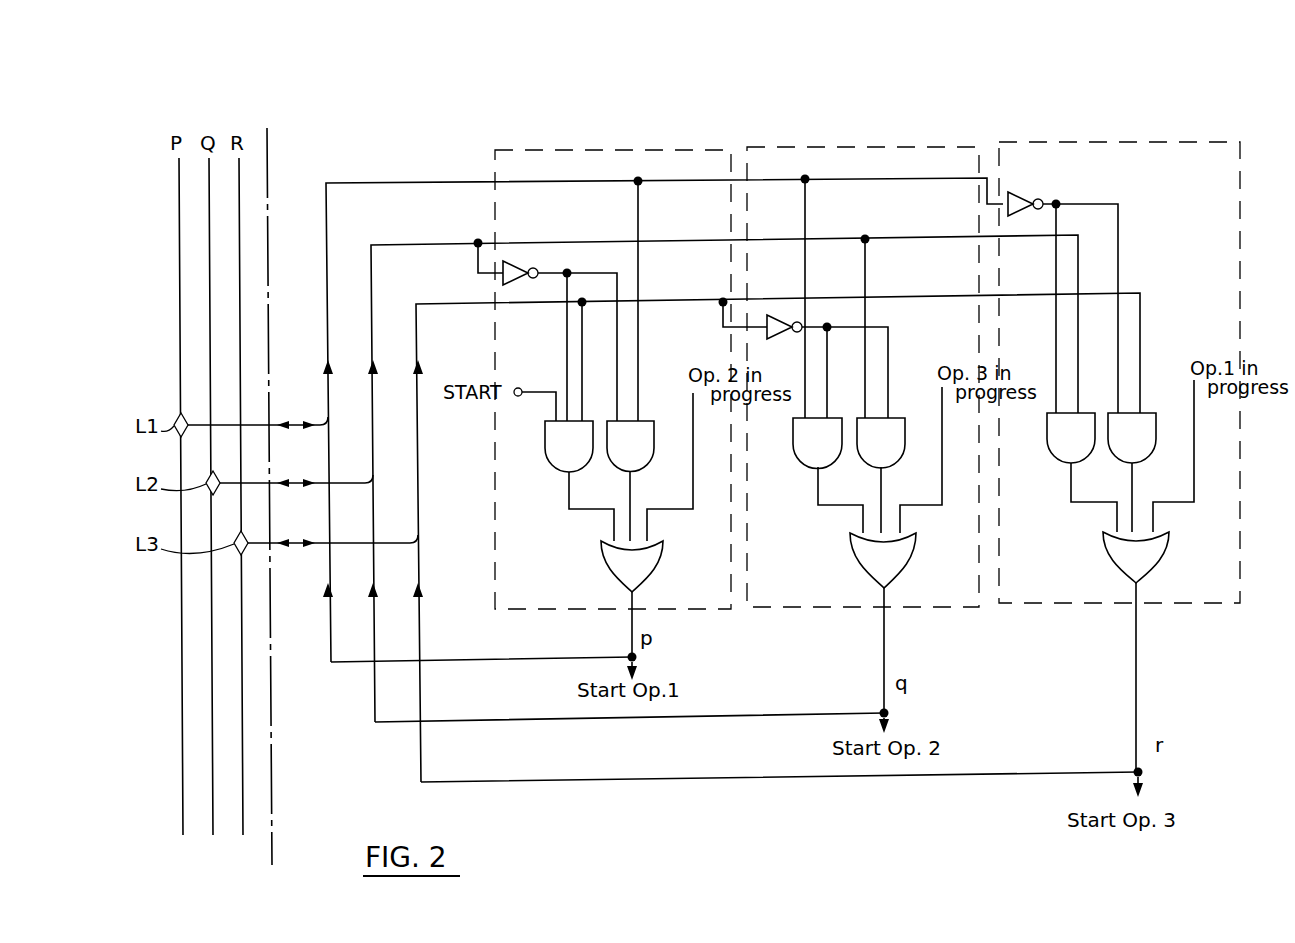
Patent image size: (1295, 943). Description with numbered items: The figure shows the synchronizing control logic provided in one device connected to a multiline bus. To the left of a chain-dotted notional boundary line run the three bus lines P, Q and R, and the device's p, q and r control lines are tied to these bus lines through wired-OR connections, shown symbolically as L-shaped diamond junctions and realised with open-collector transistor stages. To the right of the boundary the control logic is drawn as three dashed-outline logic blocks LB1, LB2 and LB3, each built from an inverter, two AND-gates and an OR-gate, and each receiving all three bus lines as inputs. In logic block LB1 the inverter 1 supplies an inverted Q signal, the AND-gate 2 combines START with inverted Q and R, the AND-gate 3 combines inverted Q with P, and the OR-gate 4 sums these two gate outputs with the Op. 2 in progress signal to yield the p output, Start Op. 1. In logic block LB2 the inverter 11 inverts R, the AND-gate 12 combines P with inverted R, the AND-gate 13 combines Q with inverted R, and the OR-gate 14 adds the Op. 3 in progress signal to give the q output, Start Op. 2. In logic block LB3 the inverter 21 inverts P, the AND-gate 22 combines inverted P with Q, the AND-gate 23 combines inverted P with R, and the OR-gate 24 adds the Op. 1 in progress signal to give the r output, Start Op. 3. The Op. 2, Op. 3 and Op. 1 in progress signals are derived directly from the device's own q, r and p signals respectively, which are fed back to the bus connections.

The inverter 1 is at (514, 281).
The AND-gate 2 is at (569, 446).
The AND-gate 3 is at (630, 446).
The OR-gate 4 is at (632, 566).
The inverter 11 is at (777, 339).
The AND-gate 12 is at (817, 443).
The AND-gate 13 is at (881, 443).
The OR-gate 14 is at (883, 560).
The inverter 21 is at (1013, 196).
The AND-gate 22 is at (1071, 438).
The AND-gate 23 is at (1132, 438).
The OR-gate 24 is at (1136, 557).
The logic block LB1 is at (634, 153).
The logic block LB2 is at (883, 150).
The logic block LB3 is at (1133, 145).